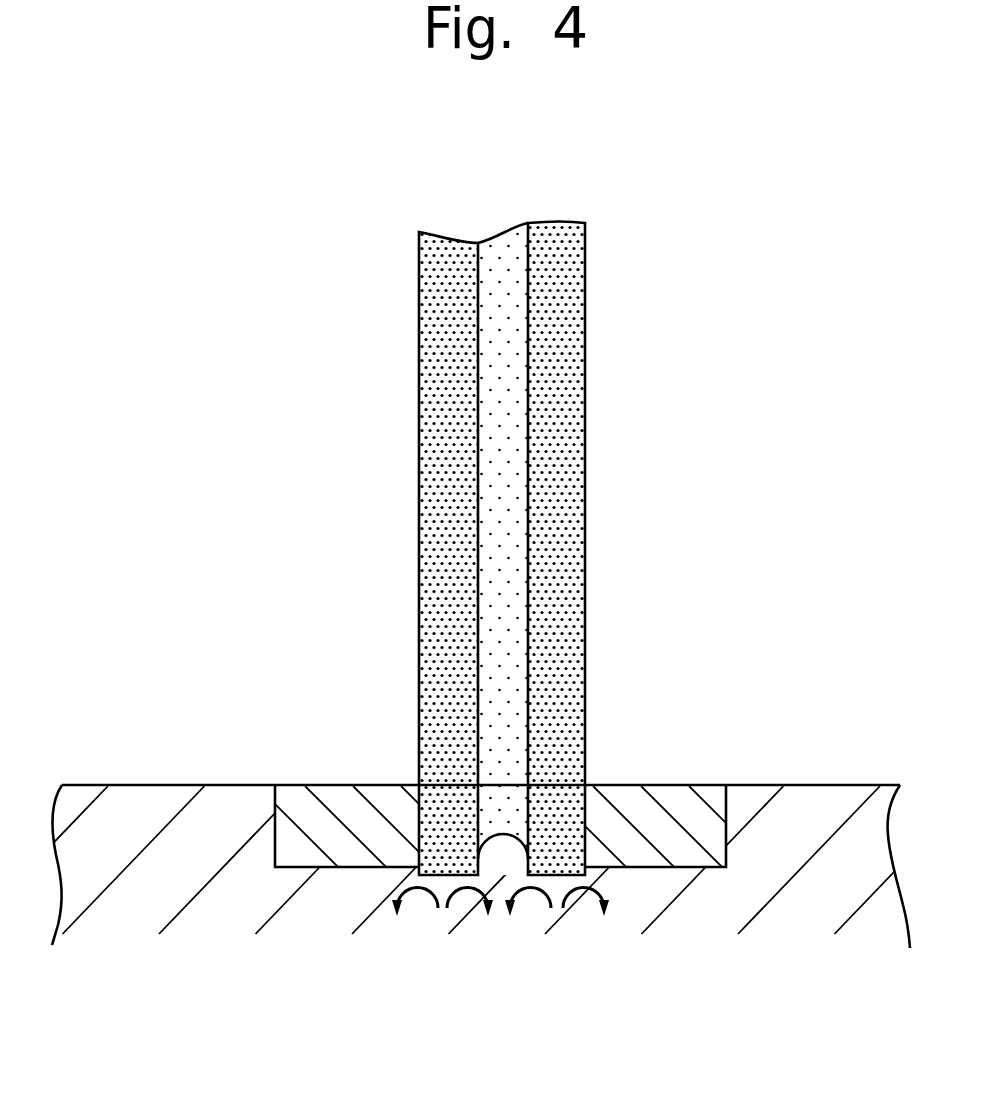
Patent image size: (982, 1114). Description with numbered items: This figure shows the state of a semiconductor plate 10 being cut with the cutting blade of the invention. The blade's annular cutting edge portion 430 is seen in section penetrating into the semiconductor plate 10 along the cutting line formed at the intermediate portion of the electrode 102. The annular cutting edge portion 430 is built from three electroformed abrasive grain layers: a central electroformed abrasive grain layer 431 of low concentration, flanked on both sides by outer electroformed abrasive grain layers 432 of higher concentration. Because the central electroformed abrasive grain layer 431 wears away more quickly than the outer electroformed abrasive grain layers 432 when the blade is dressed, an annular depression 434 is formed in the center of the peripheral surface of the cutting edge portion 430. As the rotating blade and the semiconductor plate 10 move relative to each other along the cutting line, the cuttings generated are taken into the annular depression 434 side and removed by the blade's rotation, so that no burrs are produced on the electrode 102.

The semiconductor plate 10 is at (144, 766).
The electrode 102 is at (342, 810).
The annular cutting edge portion 430 is at (492, 549).
The central electroformed abrasive grain layer 431 is at (508, 370).
The outer electroformed abrasive grain layers 432 is at (450, 508).
The annular depression 434 is at (503, 853).